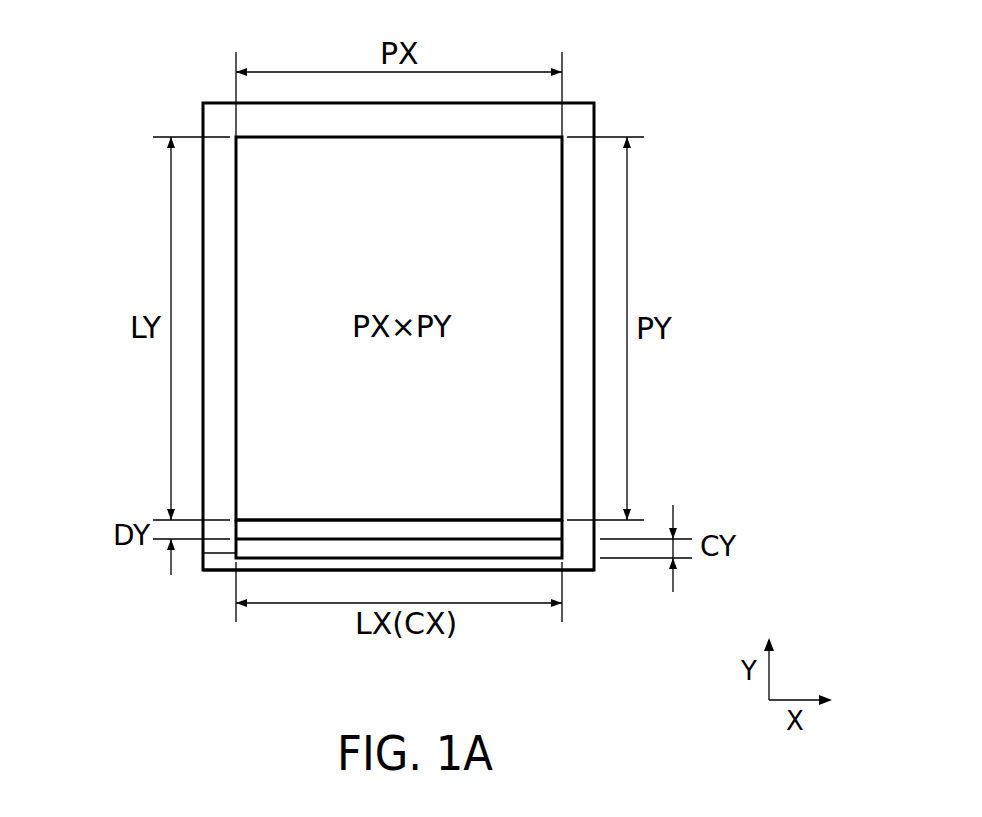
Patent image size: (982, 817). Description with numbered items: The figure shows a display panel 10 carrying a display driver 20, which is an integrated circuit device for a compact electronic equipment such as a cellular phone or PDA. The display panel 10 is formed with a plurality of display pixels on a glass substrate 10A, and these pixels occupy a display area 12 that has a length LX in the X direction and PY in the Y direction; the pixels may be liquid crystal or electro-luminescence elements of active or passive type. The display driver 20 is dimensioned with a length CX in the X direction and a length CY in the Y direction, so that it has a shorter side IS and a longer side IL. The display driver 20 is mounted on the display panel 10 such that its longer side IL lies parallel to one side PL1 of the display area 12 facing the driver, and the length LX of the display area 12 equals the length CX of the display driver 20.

The display panel 10 is at (607, 84).
The glass substrate 10A is at (596, 110).
The display area 12 is at (527, 249).
The display driver 20 is at (549, 548).
The one side of the display area PL1 is at (305, 520).
The shorter side of the display driver IS is at (203, 553).
The longer side of the display driver IL is at (258, 559).